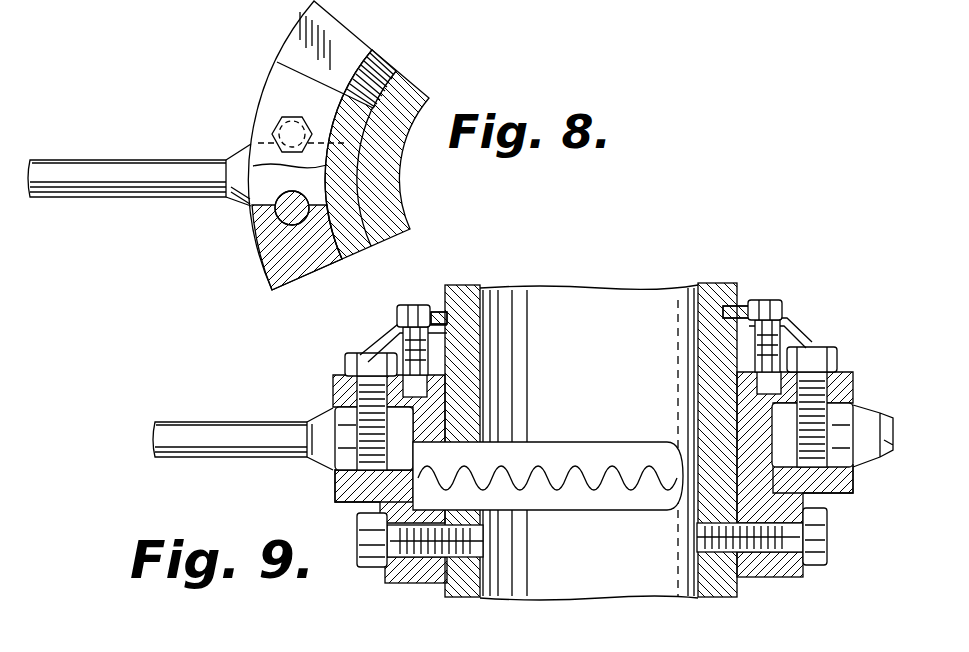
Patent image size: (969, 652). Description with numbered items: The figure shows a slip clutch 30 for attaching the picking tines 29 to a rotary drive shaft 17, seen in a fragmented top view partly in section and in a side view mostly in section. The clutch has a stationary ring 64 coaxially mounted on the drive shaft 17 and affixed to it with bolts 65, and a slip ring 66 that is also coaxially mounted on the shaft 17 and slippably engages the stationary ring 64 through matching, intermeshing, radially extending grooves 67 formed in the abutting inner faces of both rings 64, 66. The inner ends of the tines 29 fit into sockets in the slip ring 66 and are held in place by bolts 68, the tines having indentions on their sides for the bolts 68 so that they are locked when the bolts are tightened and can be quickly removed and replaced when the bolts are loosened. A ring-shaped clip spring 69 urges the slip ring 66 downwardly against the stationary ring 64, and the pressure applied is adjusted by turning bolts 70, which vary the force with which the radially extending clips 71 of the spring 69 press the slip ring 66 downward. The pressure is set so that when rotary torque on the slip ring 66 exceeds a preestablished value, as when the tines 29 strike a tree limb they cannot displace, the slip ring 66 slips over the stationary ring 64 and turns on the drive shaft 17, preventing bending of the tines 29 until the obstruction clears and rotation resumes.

In FIG. 8, the drive shaft 17 is at (407, 92).
In FIG. 9, the drive shaft 17 is at (466, 296).
In FIG. 8, the picking tines 29 is at (97, 172).
In FIG. 9, the picking tines 29 is at (190, 432).
In FIG. 9, the slip clutch 30 is at (320, 372).
In FIG. 8, the stationary ring 64 is at (345, 42).
In FIG. 9, the stationary ring 64 is at (335, 482).
In FIG. 9, the bolts 65 is at (357, 533).
In FIG. 8, the slip ring 66 is at (268, 92).
In FIG. 9, the slip ring 66 is at (335, 386).
In FIG. 8, the radially extending grooves 67 is at (370, 58).
In FIG. 9, the radially extending grooves 67 is at (560, 470).
In FIG. 8, the bolts 68 is at (285, 133).
In FIG. 9, the bolts 68 is at (350, 357).
In FIG. 9, the ring-shaped clip spring 69 is at (393, 324).
In FIG. 9, the bolts 70 is at (415, 305).
In FIG. 9, the radially extending clips 71 is at (370, 343).